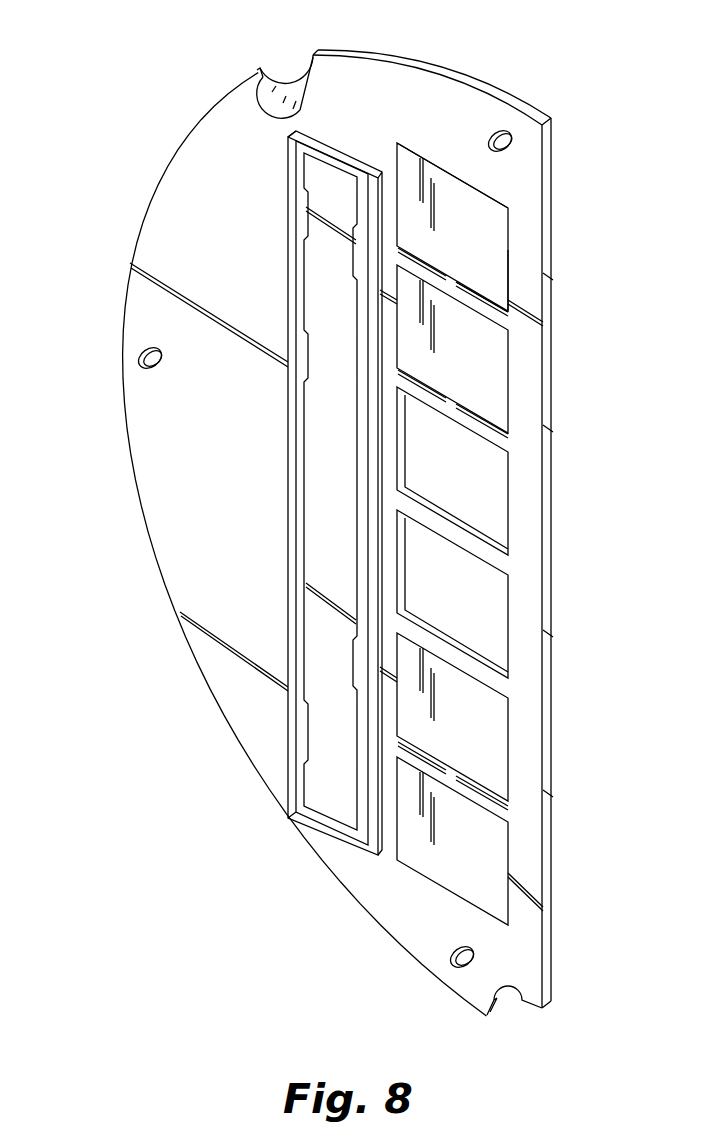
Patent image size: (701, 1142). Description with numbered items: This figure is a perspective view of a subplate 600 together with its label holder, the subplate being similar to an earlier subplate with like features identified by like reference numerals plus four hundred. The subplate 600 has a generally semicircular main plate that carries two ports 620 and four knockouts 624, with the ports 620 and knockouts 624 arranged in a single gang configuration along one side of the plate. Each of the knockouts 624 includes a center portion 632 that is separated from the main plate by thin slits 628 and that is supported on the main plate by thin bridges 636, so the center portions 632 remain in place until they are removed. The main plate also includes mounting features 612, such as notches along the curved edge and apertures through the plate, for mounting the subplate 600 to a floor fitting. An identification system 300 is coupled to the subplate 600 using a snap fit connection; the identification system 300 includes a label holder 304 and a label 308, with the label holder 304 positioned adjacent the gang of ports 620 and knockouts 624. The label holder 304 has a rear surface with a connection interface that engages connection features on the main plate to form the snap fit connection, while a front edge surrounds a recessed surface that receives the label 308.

The subplate 600 is at (95, 103).
The mounting features 612 is at (280, 90).
The label holder 304 is at (344, 158).
The label 308 is at (330, 385).
The identification system 300 is at (287, 610).
The knockouts 624 is at (473, 215).
The ports 620 is at (482, 488).
The thin bridges 636 is at (452, 175).
The thin slits 628 is at (510, 267).
The center portions 632 is at (490, 277).